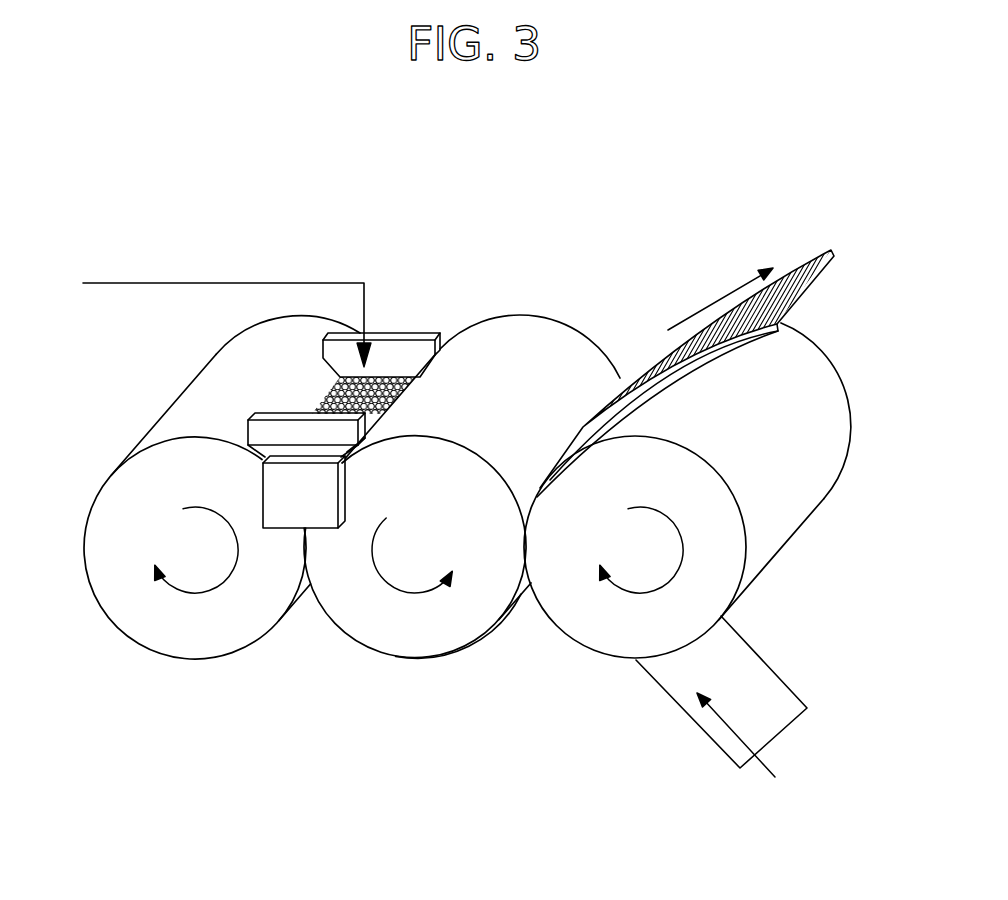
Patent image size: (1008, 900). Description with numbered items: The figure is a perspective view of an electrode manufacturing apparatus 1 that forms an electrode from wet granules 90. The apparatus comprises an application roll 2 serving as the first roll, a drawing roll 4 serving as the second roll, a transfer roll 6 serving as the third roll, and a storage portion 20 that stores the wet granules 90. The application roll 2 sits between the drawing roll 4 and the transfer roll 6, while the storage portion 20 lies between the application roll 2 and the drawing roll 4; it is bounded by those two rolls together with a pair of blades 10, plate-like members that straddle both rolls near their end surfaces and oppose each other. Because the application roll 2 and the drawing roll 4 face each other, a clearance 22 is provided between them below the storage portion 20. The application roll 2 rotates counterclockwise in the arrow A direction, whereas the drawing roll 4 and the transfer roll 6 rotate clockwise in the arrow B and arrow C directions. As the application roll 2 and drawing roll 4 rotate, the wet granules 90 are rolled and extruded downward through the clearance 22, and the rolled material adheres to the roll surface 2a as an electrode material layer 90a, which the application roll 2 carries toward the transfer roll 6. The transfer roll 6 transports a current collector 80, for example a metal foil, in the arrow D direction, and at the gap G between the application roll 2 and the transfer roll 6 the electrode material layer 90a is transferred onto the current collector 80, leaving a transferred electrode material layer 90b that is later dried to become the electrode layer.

The electrode manufacturing apparatus 1 is at (783, 218).
The application roll 2 is at (462, 470).
The roll surface 2a is at (522, 343).
The drawing roll 4 is at (145, 622).
The transfer roll 6 is at (577, 623).
The pair of blades 10 is at (305, 418).
The storage portion 20 is at (323, 387).
The clearance 22 is at (310, 608).
The gap G is at (537, 610).
The current collector 80 is at (763, 683).
The wet granules 90 is at (400, 378).
The electrode material layer 90a is at (480, 648).
The electrode material layer 90b is at (667, 358).